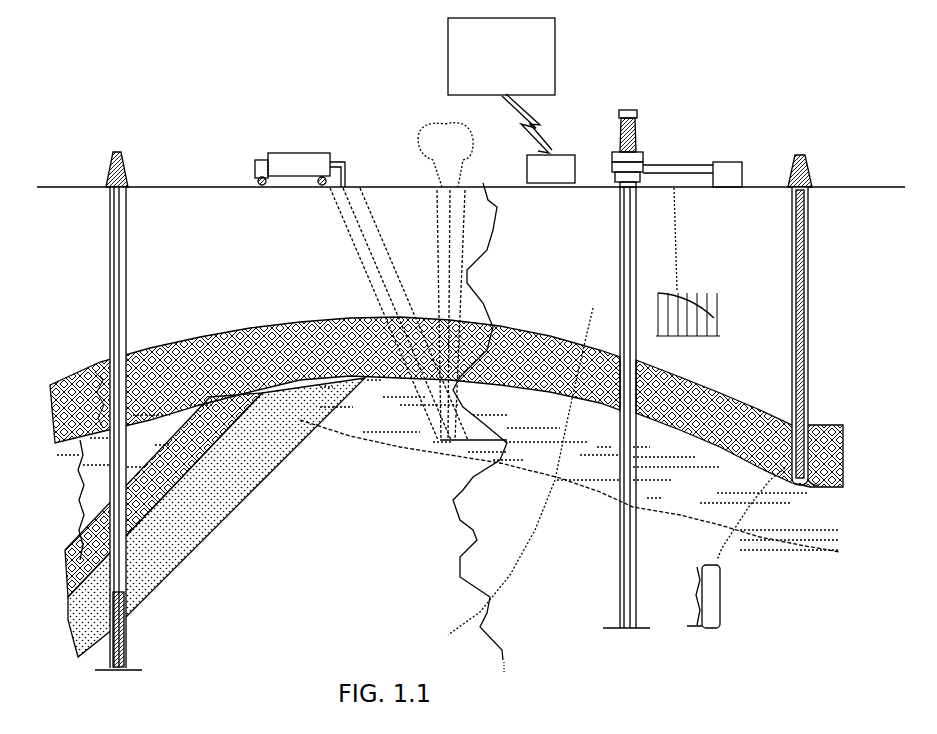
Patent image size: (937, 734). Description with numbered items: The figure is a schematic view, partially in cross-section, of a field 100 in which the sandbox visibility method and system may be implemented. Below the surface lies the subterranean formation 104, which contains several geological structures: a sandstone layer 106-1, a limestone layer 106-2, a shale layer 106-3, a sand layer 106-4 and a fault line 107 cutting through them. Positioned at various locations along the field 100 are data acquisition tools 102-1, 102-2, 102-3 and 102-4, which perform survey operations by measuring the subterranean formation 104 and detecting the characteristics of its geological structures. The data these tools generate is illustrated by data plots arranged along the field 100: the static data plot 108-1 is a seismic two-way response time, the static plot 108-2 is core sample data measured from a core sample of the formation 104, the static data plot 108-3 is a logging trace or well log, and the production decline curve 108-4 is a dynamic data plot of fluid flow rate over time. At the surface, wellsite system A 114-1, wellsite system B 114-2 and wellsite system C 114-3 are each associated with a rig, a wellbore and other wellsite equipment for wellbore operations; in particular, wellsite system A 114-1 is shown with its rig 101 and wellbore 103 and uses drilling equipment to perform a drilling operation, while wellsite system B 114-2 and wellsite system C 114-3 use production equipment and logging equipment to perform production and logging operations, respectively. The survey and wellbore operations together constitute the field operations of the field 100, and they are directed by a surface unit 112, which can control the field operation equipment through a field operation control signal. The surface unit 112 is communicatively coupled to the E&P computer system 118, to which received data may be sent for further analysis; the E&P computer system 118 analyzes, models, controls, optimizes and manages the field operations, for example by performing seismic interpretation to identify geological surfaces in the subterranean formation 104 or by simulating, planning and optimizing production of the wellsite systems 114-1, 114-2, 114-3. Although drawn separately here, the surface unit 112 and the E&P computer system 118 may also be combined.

The field 100 is at (100, 67).
The rig 101 is at (100, 149).
The data acquisition tool 102-1 is at (273, 150).
The data acquisition tool 102-2 is at (812, 490).
The data acquisition tool 102-3 is at (128, 632).
The data acquisition tool 102-4 is at (742, 334).
The wellbore 103 is at (136, 262).
The subterranean formation 104 is at (348, 513).
The sandstone layer 106-1 is at (219, 366).
The limestone layer 106-2 is at (161, 442).
The shale layer 106-3 is at (207, 455).
The sand layer 106-4 is at (236, 491).
The fault line 107 is at (583, 312).
The static data plot 108-1 is at (472, 533).
The static plot 108-2 is at (697, 572).
The static data plot 108-3 is at (78, 485).
The production decline curve 108-4 is at (690, 340).
The surface unit 112 is at (562, 180).
The wellsite system A 114-1 is at (142, 165).
The wellsite system B 114-2 is at (640, 92).
The wellsite system C 114-3 is at (776, 146).
The E&P computer system 118 is at (493, 84).